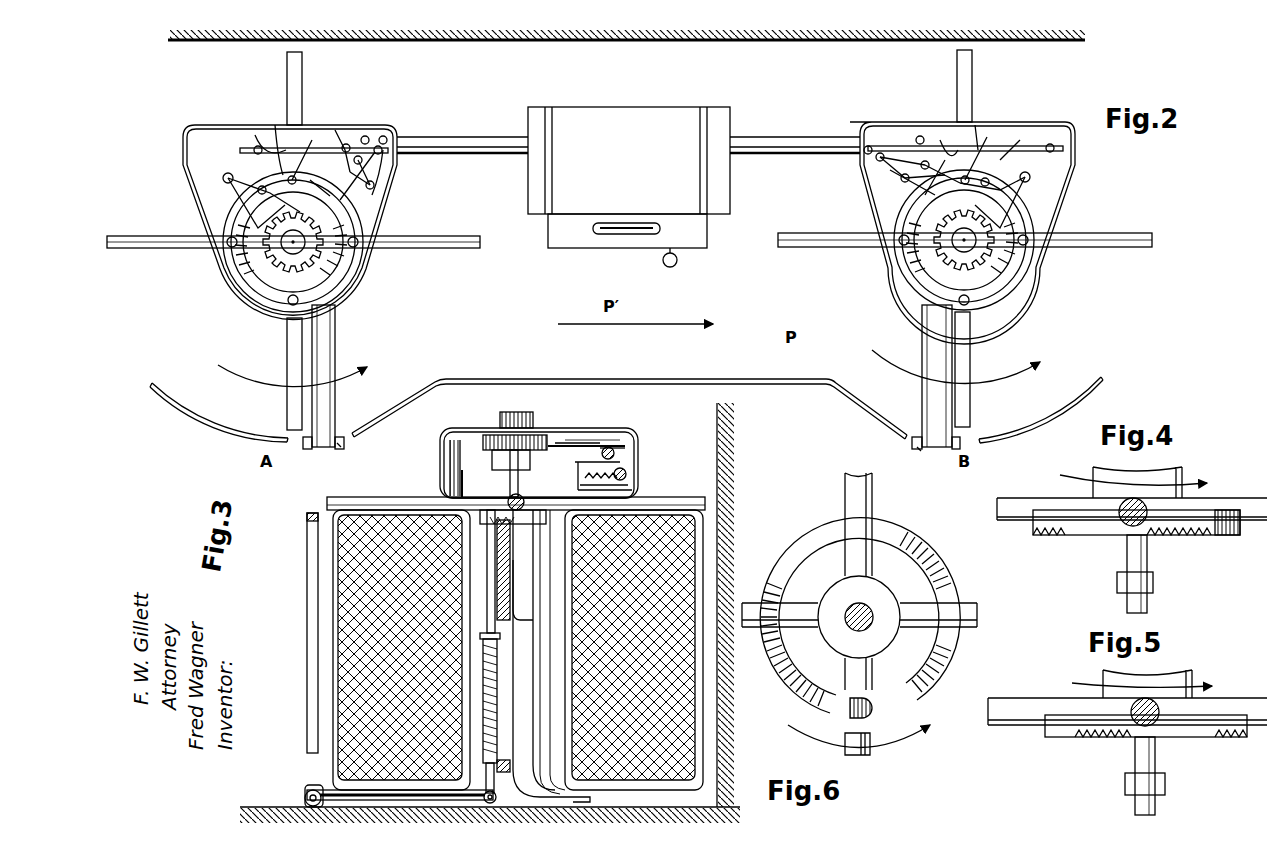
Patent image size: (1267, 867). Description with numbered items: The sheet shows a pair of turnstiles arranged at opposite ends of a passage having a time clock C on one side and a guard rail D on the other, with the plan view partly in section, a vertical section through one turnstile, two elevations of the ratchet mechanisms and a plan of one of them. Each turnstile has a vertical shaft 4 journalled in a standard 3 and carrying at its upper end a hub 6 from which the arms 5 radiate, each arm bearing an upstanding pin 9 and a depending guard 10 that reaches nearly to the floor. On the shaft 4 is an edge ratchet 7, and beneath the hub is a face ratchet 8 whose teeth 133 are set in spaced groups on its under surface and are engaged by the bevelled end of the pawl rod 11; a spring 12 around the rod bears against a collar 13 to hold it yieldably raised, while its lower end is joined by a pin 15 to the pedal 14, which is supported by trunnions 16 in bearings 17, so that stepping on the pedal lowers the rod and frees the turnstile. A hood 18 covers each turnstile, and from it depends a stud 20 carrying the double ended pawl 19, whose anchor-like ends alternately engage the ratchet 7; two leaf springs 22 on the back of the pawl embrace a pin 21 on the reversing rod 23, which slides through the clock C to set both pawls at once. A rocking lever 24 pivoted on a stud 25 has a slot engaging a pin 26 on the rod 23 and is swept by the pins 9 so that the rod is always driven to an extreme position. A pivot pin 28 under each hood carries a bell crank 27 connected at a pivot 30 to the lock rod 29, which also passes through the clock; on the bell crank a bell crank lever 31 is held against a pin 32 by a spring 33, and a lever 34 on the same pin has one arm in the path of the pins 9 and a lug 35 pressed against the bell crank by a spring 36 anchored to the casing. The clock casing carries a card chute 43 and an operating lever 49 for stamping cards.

In FIG. 3, the standard 3 is at (590, 802).
In FIG. 2, the vertical shaft 4 is at (282, 250).
In FIG. 3, the vertical shaft 4 is at (518, 415).
In FIG. 6, the vertical shaft 4 is at (875, 608).
In FIG. 4, the vertical shaft 4 is at (1133, 512).
In FIG. 5, the vertical shaft 4 is at (1145, 712).
In FIG. 2, the turnstile arm 5 is at (302, 62).
In FIG. 3, the turnstile arm 5 is at (350, 498).
In FIG. 6, the turnstile arm 5 is at (974, 605).
In FIG. 4, the turnstile arm 5 is at (1226, 499).
In FIG. 5, the turnstile arm 5 is at (1005, 702).
In FIG. 3, the hub 6 is at (495, 464).
In FIG. 6, the hub 6 is at (832, 600).
In FIG. 2, the edge ratchet 7 is at (340, 278).
In FIG. 3, the edge ratchet 7 is at (485, 437).
In FIG. 2, the face ratchet 8 is at (262, 282).
In FIG. 3, the face ratchet 8 is at (488, 500).
In FIG. 6, the face ratchet 8 is at (867, 615).
In FIG. 4, the face ratchet 8 is at (1214, 537).
In FIG. 5, the face ratchet 8 is at (1062, 740).
In FIG. 2, the upstanding pin 9 is at (262, 192).
In FIG. 3, the upstanding pin 9 is at (520, 466).
In FIG. 3, the guard 10 is at (333, 595).
In FIG. 3, the pawl rod 11 is at (496, 622).
In FIG. 6, the pawl rod 11 is at (872, 712).
In FIG. 4, the pawl rod 11 is at (1127, 555).
In FIG. 5, the pawl rod 11 is at (1156, 762).
In FIG. 3, the spring 12 is at (498, 664).
In FIG. 3, the collar 13 is at (500, 640).
In FIG. 2, the pedal 14 is at (926, 330).
In FIG. 3, the pedal 14 is at (330, 790).
In FIG. 3, the pin 15 is at (497, 796).
In FIG. 2, the trunnions 16 is at (344, 441).
In FIG. 3, the trunnions 16 is at (313, 790).
In FIG. 2, the bearings 17 is at (343, 449).
In FIG. 3, the bearings 17 is at (305, 798).
In FIG. 2, the hood 18 is at (192, 126).
In FIG. 3, the hood 18 is at (547, 430).
In FIG. 2, the double ended pawl 19 is at (235, 172).
In FIG. 3, the double ended pawl 19 is at (582, 444).
In FIG. 2, the stud 20 is at (282, 148).
In FIG. 2, the pin 21 is at (310, 130).
In FIG. 3, the pin 21 is at (626, 450).
In FIG. 2, the leaf springs 22 is at (278, 140).
In FIG. 3, the leaf springs 22 is at (602, 446).
In FIG. 2, the reversing rod 23 is at (508, 156).
In FIG. 3, the reversing rod 23 is at (632, 455).
In FIG. 2, the rocking lever 24 is at (225, 178).
In FIG. 3, the rocking lever 24 is at (616, 460).
In FIG. 2, the stud 25 is at (225, 185).
In FIG. 2, the pin 26 is at (240, 150).
In FIG. 3, the pin 26 is at (627, 475).
In FIG. 2, the bell crank 27 is at (360, 150).
In FIG. 3, the bell crank 27 is at (636, 490).
In FIG. 2, the pivot pin 28 is at (392, 190).
In FIG. 2, the lock rod 29 is at (477, 136).
In FIG. 3, the lock rod 29 is at (640, 478).
In FIG. 2, the pivot 30 is at (369, 138).
In FIG. 2, the bell crank lever 31 is at (337, 138).
In FIG. 2, the pin 32 is at (348, 145).
In FIG. 2, the spring 33 is at (393, 176).
In FIG. 2, the lever 34 is at (346, 201).
In FIG. 3, the lever 34 is at (575, 490).
In FIG. 2, the lug 35 is at (393, 162).
In FIG. 2, the spring 36 is at (390, 140).
In FIG. 2, the card chute 43 is at (620, 236).
In FIG. 2, the operating lever 49 is at (672, 268).
In FIG. 6, the ratchet teeth 133 is at (912, 532).
In FIG. 4, the ratchet teeth 133 is at (1050, 537).
In FIG. 5, the ratchet teeth 133 is at (1097, 740).
In FIG. 2, the time clock C is at (620, 112).
In FIG. 2, the guard rail D is at (633, 380).
In FIG. 3, the guard rail D is at (307, 520).